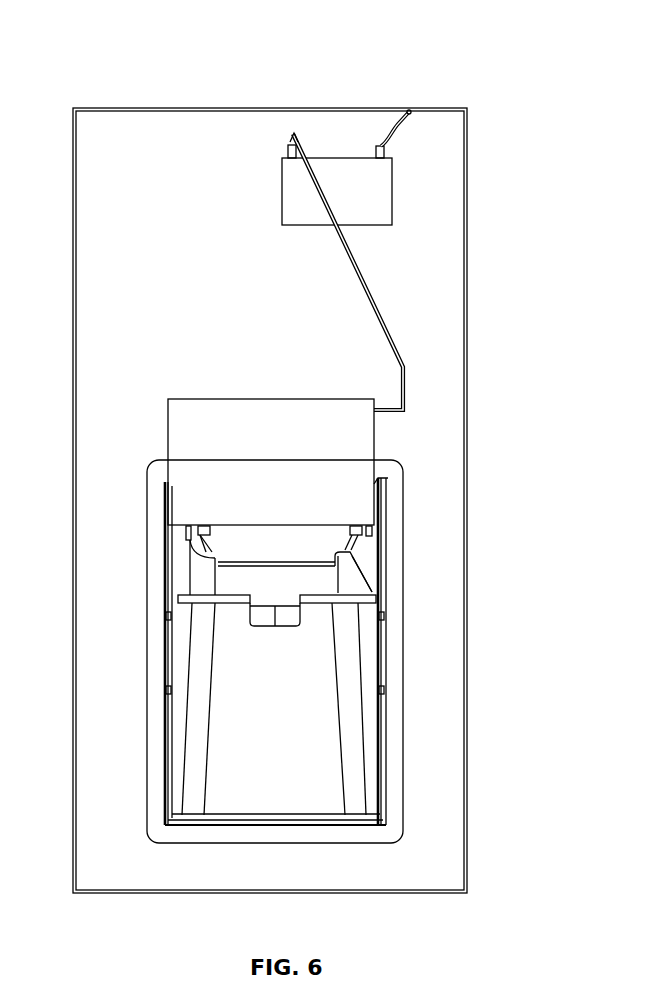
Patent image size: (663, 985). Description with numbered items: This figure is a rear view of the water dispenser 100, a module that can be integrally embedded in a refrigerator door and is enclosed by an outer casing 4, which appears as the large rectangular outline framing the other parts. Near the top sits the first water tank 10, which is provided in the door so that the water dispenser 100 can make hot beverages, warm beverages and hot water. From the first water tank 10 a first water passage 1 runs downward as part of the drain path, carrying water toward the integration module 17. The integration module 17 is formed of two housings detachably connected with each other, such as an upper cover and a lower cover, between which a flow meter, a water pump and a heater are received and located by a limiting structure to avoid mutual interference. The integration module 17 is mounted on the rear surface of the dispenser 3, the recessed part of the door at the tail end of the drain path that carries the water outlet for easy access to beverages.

The water dispenser 100 is at (322, 31).
The outer casing 4 is at (155, 110).
The first water tank 10 is at (286, 210).
The first water passage 1 is at (378, 140).
The integration module 17 is at (178, 413).
The dispenser 3 is at (160, 582).